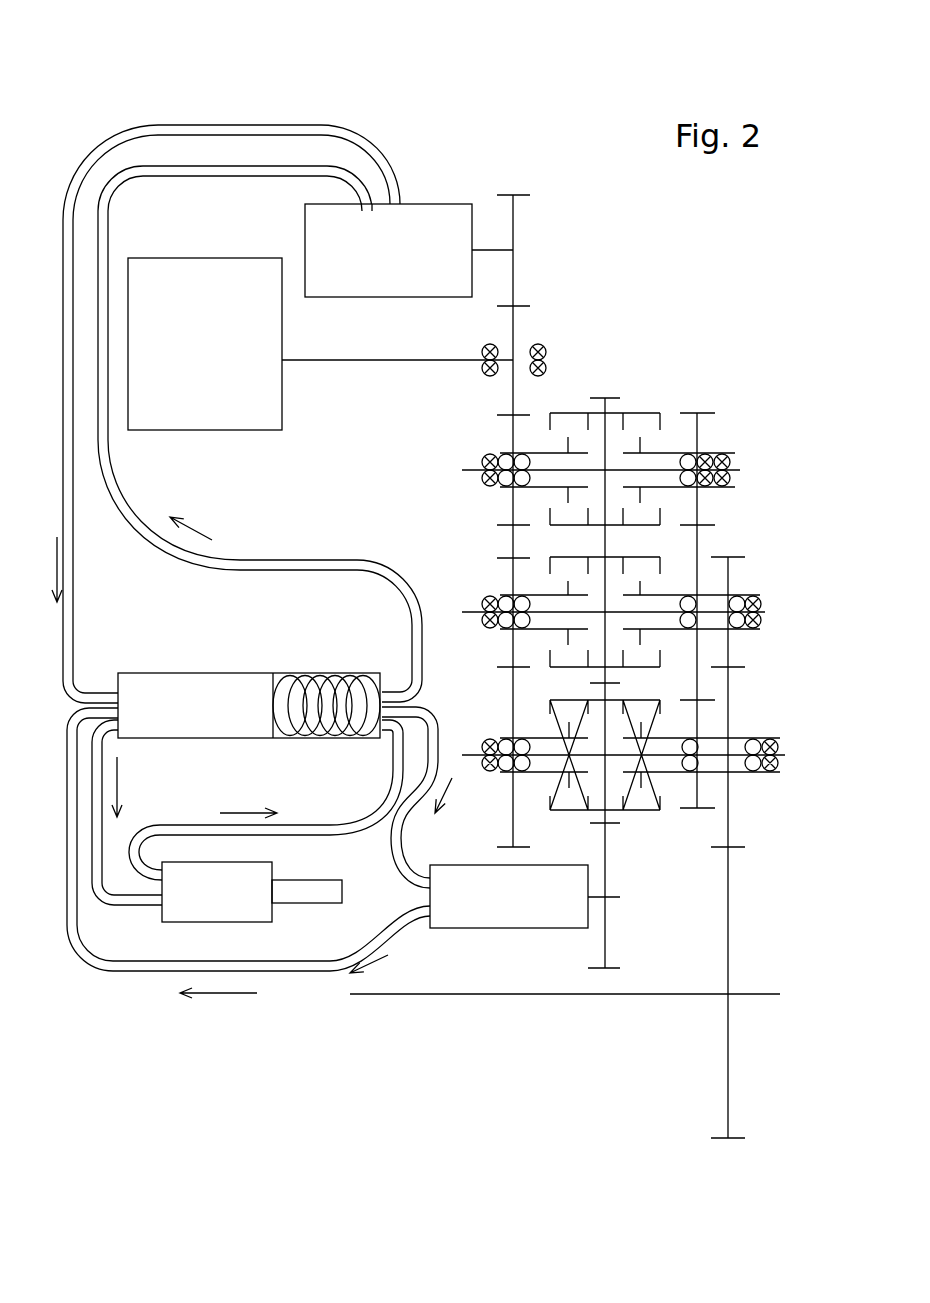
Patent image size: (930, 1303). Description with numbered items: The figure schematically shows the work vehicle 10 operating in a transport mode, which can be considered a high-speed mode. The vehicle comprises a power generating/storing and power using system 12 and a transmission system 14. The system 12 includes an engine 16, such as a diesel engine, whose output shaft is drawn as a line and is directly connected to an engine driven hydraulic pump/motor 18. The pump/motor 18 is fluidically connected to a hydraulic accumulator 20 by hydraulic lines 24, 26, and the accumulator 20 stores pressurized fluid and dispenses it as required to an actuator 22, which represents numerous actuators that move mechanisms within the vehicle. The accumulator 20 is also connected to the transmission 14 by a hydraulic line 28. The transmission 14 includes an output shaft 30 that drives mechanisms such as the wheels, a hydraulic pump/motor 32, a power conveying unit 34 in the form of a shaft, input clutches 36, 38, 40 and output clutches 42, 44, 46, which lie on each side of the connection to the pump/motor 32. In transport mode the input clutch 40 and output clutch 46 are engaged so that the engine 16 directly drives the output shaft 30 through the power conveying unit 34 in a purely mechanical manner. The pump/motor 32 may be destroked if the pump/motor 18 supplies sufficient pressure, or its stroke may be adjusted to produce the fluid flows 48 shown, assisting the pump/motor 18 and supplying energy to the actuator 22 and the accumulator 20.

The work vehicle 10 is at (566, 53).
The power generating/storing and power using system 12 is at (176, 84).
The transmission system 14 is at (631, 311).
The engine 16 is at (283, 400).
The engine driven hydraulic pump/motor 18 is at (428, 204).
The hydraulic accumulator 20 is at (216, 673).
The actuator 22 is at (197, 923).
The hydraulic line 24 is at (312, 563).
The hydraulic line 26 is at (78, 536).
The hydraulic line 28 is at (82, 955).
The output shaft 30 is at (710, 995).
The hydraulic pump/motor 32 is at (495, 930).
The power conveying unit 34 is at (605, 933).
The input clutch 36 is at (568, 412).
The input clutch 38 is at (560, 557).
The input clutch 40 is at (565, 812).
The output clutch 42 is at (643, 413).
The output clutch 44 is at (640, 557).
The output clutch 46 is at (640, 811).
The fluid flow 48 is at (440, 800).